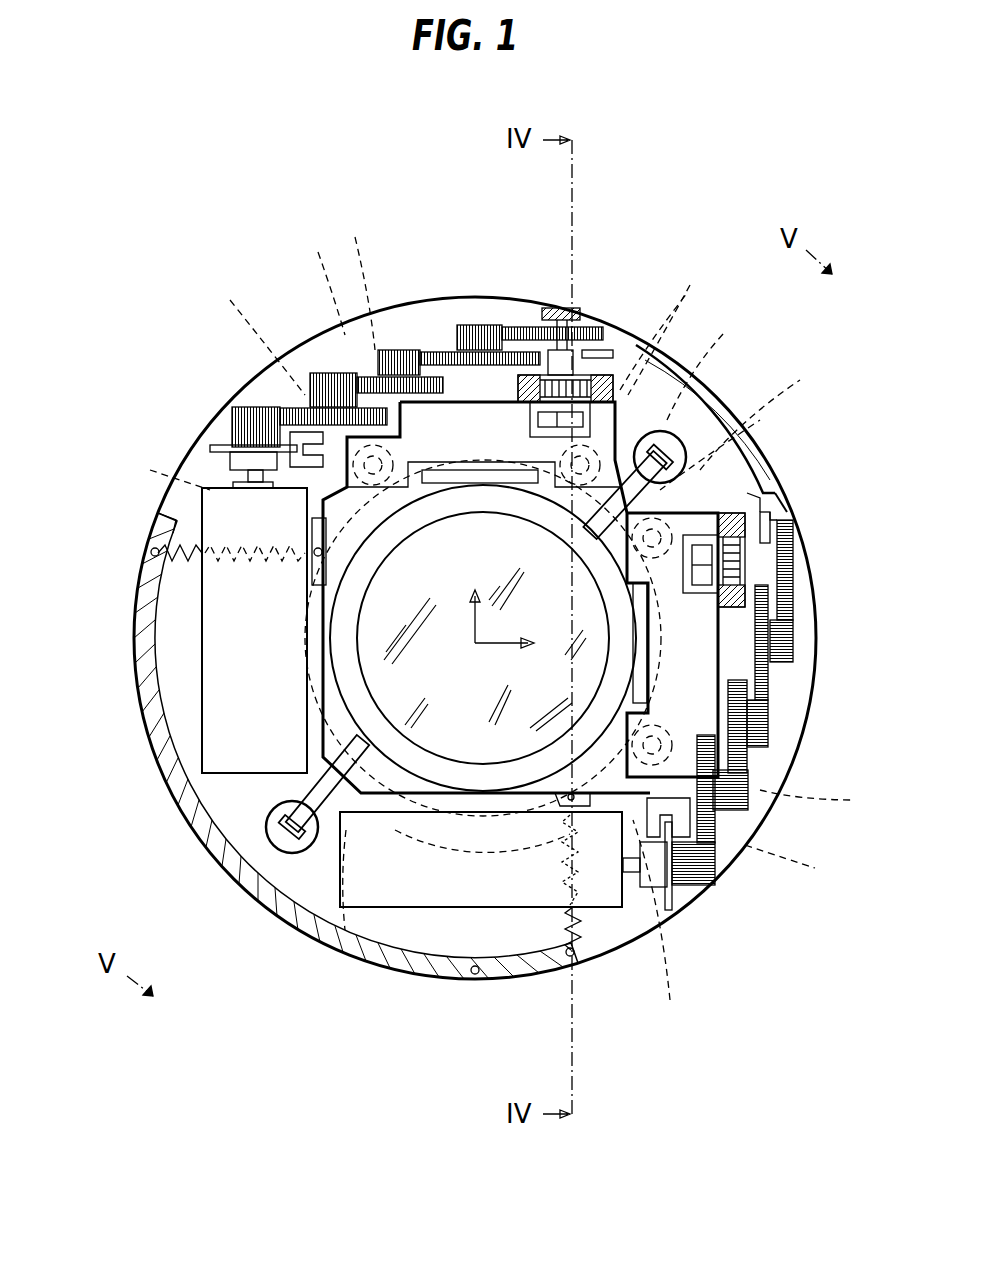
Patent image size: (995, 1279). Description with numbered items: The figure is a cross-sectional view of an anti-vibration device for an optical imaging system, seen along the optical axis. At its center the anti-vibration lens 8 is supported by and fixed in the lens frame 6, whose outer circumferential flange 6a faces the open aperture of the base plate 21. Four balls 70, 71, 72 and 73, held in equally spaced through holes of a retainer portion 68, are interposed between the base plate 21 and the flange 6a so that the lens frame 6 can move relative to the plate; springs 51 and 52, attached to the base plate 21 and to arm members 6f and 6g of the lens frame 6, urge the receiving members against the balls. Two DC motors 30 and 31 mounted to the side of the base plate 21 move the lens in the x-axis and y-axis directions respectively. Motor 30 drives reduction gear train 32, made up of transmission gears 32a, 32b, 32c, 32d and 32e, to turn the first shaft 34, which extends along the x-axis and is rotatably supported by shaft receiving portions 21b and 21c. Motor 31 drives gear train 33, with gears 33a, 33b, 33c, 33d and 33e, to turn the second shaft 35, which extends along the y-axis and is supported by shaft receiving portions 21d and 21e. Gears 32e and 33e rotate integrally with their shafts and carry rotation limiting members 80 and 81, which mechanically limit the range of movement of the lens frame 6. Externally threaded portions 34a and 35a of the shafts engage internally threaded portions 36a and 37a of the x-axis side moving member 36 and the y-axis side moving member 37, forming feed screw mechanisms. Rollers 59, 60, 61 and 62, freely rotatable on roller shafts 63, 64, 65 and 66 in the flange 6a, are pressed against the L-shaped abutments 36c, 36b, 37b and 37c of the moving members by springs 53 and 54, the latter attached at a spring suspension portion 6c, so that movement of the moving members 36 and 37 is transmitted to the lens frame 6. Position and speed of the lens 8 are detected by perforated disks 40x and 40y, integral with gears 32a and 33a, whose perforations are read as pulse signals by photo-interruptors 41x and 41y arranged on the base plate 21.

The lens frame 6 is at (432, 768).
The flange 6a is at (174, 520).
The spring suspension portion 6c is at (470, 945).
The arm member 6f is at (293, 848).
The arm member 6g is at (738, 405).
The anti-vibration lens 8 is at (460, 665).
The base plate 21 is at (237, 820).
The shaft receiving portion 21b is at (720, 550).
The shaft receiving portion 21c is at (720, 655).
The shaft receiving portion 21d is at (565, 308).
The shaft receiving portion 21e is at (455, 490).
The DC motor 30 is at (430, 900).
The DC motor 31 is at (205, 750).
The gear train 32 is at (802, 742).
The transmission gear 32a is at (700, 885).
The transmission gear 32b is at (745, 795).
The transmission gear 32c is at (748, 735).
The transmission gear 32d is at (793, 640).
The transmission gear 32e is at (793, 575).
The gear train 33 is at (359, 321).
The transmission gear 33a is at (235, 418).
The transmission gear 33b is at (314, 375).
The transmission gear 33c is at (342, 307).
The transmission gear 33d is at (455, 352).
The transmission gear 33e is at (470, 325).
The first shaft 34 is at (748, 525).
The externally threaded portion 34a is at (793, 600).
The second shaft 35 is at (600, 378).
The externally threaded portion 35a is at (540, 328).
The x-axis side moving member 36 is at (768, 690).
The internally threaded portion 36a is at (787, 520).
The abutment 36b is at (628, 723).
The abutment 36c is at (630, 585).
The y-axis side moving member 37 is at (718, 400).
The internally threaded portion 37a is at (395, 352).
The abutment 37b is at (390, 488).
The abutment 37c is at (555, 515).
The perforated disk 40x is at (660, 890).
The perforated disk 40y is at (215, 448).
The photo-interruptor 41x is at (720, 870).
The photo-interruptor 41y is at (292, 440).
The spring 51 is at (270, 832).
The spring 52 is at (720, 420).
The spring 53 is at (156, 555).
The spring 54 is at (568, 945).
The roller 59 is at (659, 485).
The roller 60 is at (822, 863).
The roller 61 is at (697, 388).
The roller 62 is at (209, 290).
The roller shaft 63 is at (760, 450).
The roller shaft 64 is at (862, 797).
The roller shaft 65 is at (505, 500).
The roller shaft 66 is at (304, 237).
The retainer portion 68 is at (302, 700).
The ball 70 is at (790, 420).
The ball 71 is at (320, 988).
The ball 72 is at (697, 1008).
The ball 73 is at (139, 462).
The rotation limiting member 80 is at (770, 515).
The rotation limiting member 81 is at (590, 355).